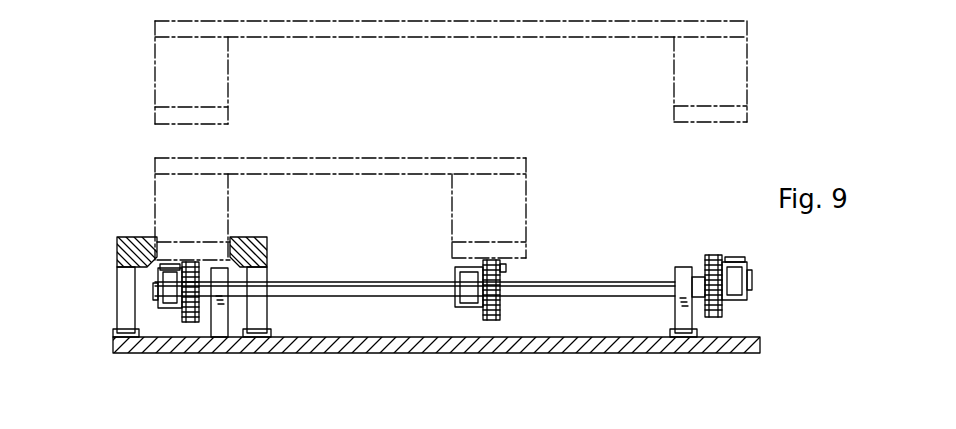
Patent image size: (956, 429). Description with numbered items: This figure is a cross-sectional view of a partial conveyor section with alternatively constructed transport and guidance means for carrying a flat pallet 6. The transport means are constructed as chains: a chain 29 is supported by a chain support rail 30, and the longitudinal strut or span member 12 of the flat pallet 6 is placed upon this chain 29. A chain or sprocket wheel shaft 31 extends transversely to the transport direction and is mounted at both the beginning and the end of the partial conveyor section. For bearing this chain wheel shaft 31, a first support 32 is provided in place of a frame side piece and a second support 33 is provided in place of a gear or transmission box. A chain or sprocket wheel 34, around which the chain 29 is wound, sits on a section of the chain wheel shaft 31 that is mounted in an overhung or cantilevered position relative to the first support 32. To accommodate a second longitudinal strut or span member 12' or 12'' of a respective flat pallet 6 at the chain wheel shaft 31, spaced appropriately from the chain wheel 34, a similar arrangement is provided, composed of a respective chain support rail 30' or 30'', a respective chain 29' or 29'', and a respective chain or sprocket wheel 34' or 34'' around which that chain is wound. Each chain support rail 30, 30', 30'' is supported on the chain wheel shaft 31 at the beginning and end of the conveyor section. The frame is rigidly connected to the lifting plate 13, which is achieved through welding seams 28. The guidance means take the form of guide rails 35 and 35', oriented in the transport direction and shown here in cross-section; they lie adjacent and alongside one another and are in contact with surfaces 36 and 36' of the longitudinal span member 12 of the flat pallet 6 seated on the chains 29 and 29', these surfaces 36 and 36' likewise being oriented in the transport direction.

The flat pallet 6 is at (432, 134).
The longitudinal strut or span member 12 is at (416, 139).
The second longitudinal strut or span member 12' is at (524, 208).
The second longitudinal strut or span member 12'' is at (748, 70).
The lifting plate 13 is at (320, 345).
The welding seams 28 is at (262, 331).
The chain 29 is at (177, 335).
The chain 29' is at (505, 333).
The chain 29'' is at (728, 330).
The chain support rail 30 is at (125, 230).
The chain support rail 30' is at (545, 250).
The chain support rail 30'' is at (750, 234).
The chain or sprocket wheel shaft 31 is at (364, 290).
The first support 32 is at (219, 337).
The second support 33 is at (683, 267).
The chain or sprocket wheel 34 is at (118, 293).
The chain or sprocket wheel 34' is at (524, 336).
The chain or sprocket wheel 34'' is at (775, 296).
The guide rail 35 is at (116, 285).
The guide rail 35' is at (269, 287).
The surface 36 is at (96, 113).
The surface 36' is at (299, 87).